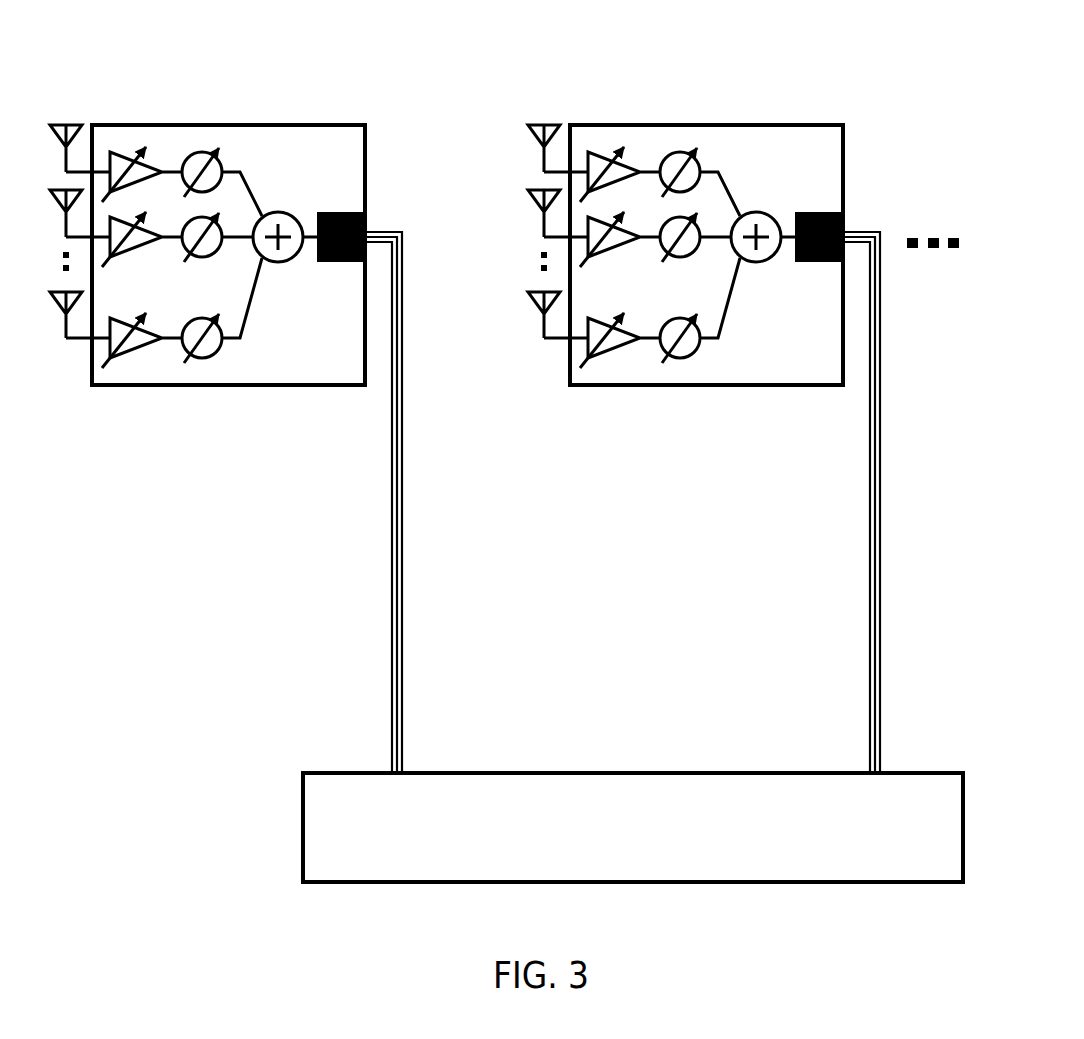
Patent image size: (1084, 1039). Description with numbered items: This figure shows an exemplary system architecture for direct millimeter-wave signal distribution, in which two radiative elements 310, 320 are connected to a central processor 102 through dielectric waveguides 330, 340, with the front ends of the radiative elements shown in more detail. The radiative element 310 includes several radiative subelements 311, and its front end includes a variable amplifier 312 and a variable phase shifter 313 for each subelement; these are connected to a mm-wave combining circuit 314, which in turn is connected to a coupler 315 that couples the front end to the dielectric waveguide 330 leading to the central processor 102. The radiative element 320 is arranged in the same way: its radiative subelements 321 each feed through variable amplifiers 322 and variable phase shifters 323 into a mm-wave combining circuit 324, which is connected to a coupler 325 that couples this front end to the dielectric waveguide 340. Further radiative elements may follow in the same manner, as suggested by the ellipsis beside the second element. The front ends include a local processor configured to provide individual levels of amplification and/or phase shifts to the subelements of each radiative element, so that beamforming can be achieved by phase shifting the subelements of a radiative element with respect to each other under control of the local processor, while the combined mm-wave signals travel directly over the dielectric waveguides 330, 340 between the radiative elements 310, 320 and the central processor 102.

The central processor 102 is at (633, 827).
The radiative element 310 is at (203, 105).
The radiative subelements 311 is at (66, 364).
The variable amplifiers 312 is at (135, 364).
The variable phase shifters 313 is at (208, 364).
The mm-wave combining circuit 314 is at (280, 279).
The coupler 315 is at (337, 279).
The radiative element 320 is at (706, 197).
The radiative subelements 321 is at (558, 309).
The variable amplifiers 322 is at (620, 358).
The variable phase shifters 323 is at (700, 321).
The mm-wave combining circuit 324 is at (763, 390).
The coupler 325 is at (815, 353).
The dielectric waveguide 330 is at (403, 697).
The dielectric waveguide 340 is at (803, 502).